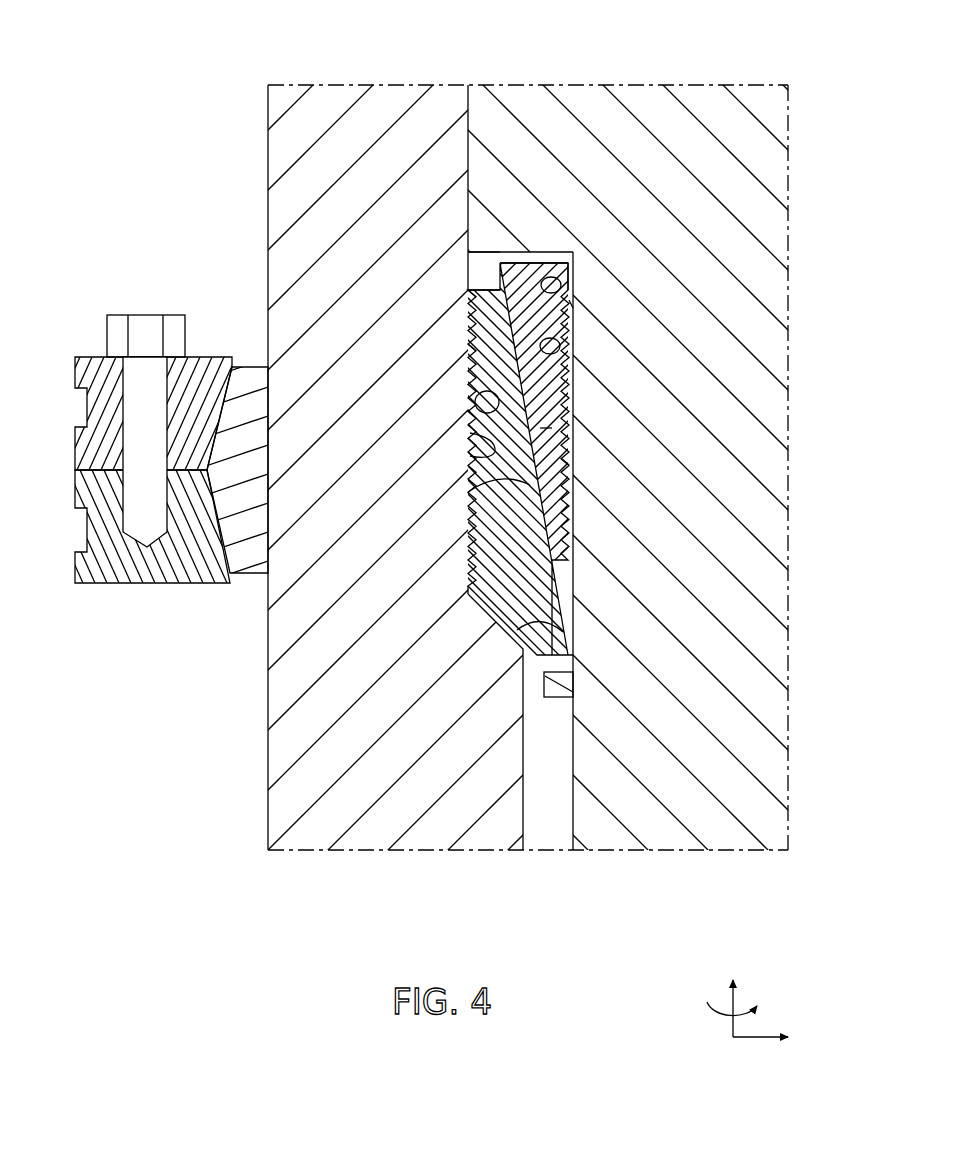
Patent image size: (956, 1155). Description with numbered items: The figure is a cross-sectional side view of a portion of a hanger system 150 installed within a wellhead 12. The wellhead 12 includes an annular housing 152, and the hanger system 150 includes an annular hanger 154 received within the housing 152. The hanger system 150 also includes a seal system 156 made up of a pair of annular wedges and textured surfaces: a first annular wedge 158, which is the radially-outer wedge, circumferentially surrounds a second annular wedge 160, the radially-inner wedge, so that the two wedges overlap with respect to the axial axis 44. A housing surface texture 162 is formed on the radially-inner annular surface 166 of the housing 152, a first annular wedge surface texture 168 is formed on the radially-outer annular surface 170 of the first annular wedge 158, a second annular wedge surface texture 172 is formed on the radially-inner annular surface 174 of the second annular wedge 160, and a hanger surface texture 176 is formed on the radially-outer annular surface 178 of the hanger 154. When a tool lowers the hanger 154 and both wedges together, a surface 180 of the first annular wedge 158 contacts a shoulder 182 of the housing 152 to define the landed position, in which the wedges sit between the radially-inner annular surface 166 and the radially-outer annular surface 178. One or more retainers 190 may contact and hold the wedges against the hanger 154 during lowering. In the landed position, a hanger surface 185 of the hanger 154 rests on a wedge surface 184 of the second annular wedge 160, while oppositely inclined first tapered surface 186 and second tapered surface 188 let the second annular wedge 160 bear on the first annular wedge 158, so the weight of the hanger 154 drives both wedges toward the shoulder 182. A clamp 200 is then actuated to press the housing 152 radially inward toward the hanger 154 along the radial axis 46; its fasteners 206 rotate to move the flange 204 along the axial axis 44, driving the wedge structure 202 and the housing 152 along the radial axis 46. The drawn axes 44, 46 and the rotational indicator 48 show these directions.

The wellhead 12 is at (236, 28).
The hanger system 150 is at (752, 49).
The housing 152 is at (285, 141).
The hanger 154 is at (766, 337).
The seal system 156 is at (598, 220).
The first annular wedge 158 is at (510, 514).
The second annular wedge 160 is at (565, 462).
The housing surface texture 162 is at (468, 353).
The radially-inner annular surface 166 is at (472, 295).
The first annular wedge surface texture 168 is at (474, 404).
The radially-outer annular surface 170 is at (470, 443).
The second annular wedge surface texture 172 is at (567, 271).
The radially-inner annular surface 174 is at (560, 348).
The hanger surface texture 176 is at (574, 303).
The radially-outer annular surface 178 is at (566, 262).
The surface 180 is at (563, 632).
The shoulder 182 is at (493, 625).
The wedge surface 184 is at (538, 264).
The hanger surface 185 is at (535, 196).
The first tapered surface 186 is at (468, 491).
The second tapered surface 188 is at (548, 427).
The retainer 190 is at (543, 692).
The clamp 200 is at (71, 292).
The wedge structure 202 is at (248, 555).
The flange 204 is at (98, 445).
The fastener 206 is at (147, 328).
The axial axis 44 is at (732, 1000).
The radial axis 46 is at (752, 1040).
The rotational direction 48 is at (710, 1022).